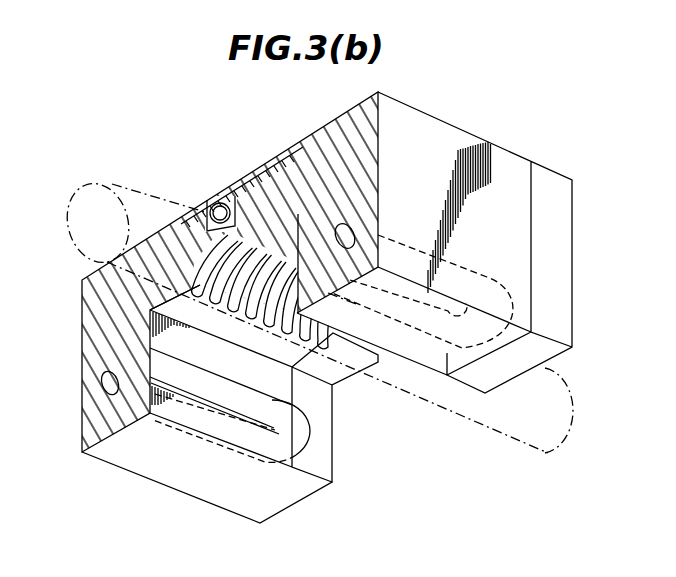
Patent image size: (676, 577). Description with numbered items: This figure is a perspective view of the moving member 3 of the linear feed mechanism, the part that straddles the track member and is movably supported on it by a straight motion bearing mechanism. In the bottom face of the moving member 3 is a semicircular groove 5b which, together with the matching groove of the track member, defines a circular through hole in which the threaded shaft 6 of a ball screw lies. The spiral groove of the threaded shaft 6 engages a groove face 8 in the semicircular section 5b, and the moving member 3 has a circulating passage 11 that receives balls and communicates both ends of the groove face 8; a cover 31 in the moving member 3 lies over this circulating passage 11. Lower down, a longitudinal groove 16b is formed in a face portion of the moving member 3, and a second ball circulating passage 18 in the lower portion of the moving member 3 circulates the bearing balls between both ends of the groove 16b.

The moving member 3 is at (478, 148).
The groove 16b is at (137, 367).
The ball circulating passage 18 is at (487, 277).
The cover 31 is at (253, 168).
The semicircular groove 5b is at (236, 198).
The circulating passage 11 is at (209, 207).
The groove face 8 is at (281, 262).
The threaded shaft 6 is at (88, 190).